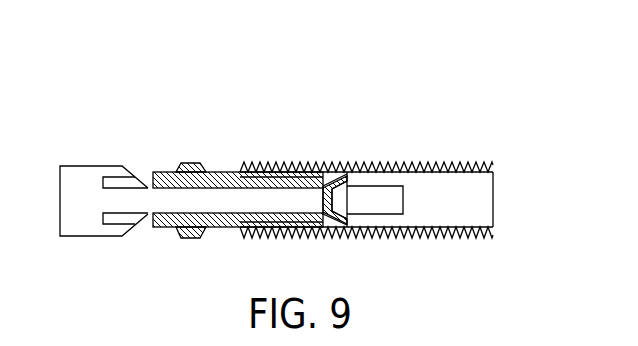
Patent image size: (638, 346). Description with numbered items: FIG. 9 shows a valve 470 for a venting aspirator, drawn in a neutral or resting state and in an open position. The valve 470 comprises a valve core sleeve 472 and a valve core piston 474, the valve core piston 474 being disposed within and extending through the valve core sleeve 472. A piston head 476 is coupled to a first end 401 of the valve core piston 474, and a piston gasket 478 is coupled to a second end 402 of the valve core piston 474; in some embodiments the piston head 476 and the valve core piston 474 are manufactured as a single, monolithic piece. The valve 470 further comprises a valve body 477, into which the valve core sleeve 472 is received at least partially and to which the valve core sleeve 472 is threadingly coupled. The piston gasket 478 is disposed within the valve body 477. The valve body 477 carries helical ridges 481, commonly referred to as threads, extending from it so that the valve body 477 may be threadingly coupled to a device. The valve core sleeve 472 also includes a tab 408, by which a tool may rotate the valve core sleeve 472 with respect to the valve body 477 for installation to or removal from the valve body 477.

The valve 470 is at (328, 88).
The piston head 476 is at (96, 166).
The first end 401 is at (122, 203).
The second end 402 is at (403, 199).
The valve core sleeve 472 is at (220, 171).
The tab 408 is at (182, 165).
The valve core piston 474 is at (285, 187).
The piston gasket 478 is at (348, 177).
The valve body 477 is at (467, 165).
The helical ridges 481 is at (492, 178).